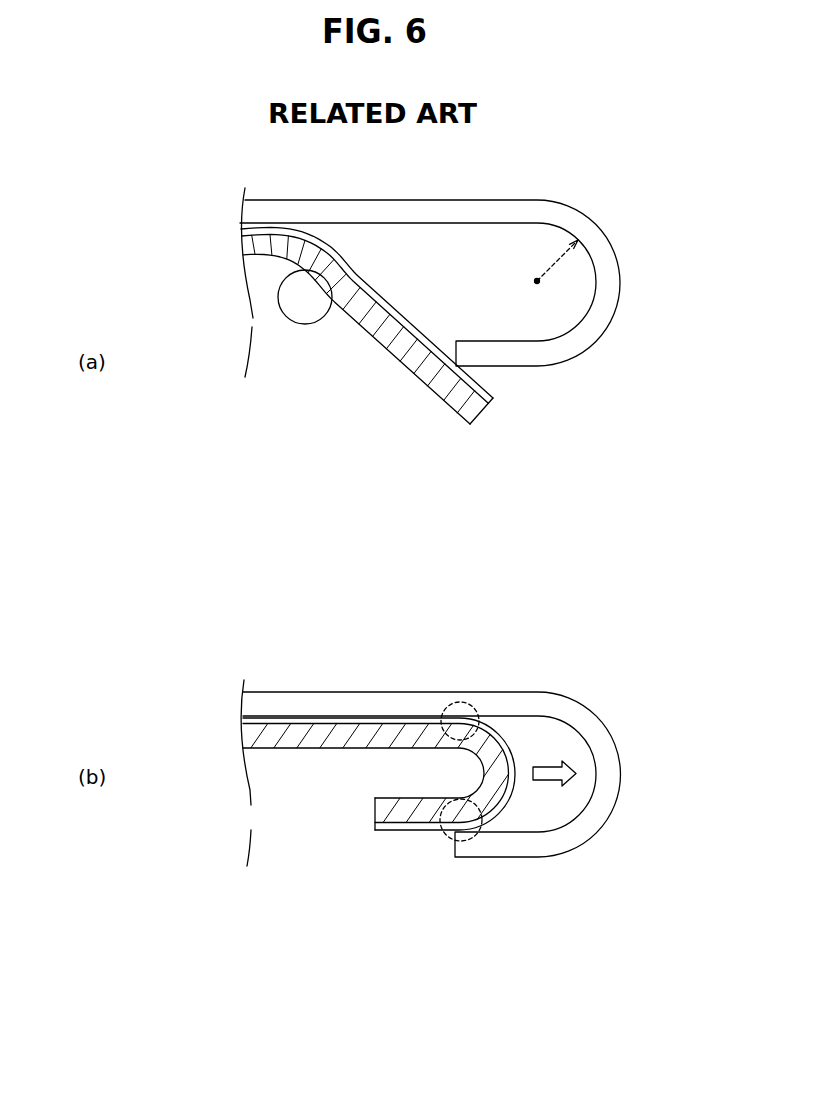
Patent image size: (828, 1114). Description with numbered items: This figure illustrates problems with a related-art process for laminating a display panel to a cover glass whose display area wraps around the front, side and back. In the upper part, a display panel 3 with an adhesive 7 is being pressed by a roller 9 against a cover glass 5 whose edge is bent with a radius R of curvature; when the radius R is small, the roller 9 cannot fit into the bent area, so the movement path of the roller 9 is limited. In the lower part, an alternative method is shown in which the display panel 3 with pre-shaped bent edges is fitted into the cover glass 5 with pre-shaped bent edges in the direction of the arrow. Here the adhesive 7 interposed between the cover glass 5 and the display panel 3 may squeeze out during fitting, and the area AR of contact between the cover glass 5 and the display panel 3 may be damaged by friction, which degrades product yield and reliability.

The display panel 3 is at (441, 395).
The cover glass 5 is at (593, 322).
The adhesive 7 is at (496, 397).
The roller 9 is at (305, 312).
The radius of curvature R is at (562, 254).
The area of contact AR is at (460, 706).